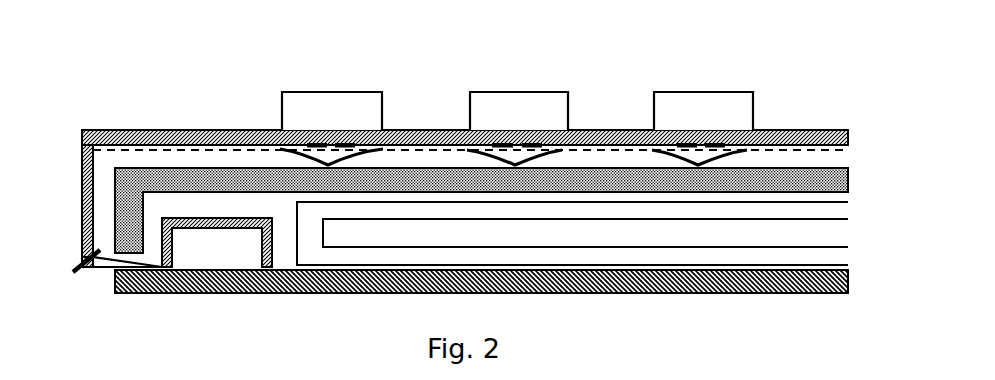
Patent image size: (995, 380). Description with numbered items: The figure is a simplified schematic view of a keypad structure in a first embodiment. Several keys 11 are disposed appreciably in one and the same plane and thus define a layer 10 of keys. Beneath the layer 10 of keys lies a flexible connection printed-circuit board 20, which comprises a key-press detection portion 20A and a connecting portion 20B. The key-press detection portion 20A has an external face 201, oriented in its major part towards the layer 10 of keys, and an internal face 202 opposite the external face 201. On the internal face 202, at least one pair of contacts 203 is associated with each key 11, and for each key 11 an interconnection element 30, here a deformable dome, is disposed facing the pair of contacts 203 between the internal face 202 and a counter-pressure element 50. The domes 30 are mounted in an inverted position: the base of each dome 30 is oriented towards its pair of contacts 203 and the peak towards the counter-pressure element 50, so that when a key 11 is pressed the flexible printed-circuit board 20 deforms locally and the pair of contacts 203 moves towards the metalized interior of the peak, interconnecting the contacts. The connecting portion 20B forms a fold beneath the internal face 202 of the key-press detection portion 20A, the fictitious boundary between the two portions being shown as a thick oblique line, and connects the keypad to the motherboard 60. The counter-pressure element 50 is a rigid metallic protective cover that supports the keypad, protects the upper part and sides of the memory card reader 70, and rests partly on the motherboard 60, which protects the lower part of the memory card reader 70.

The layer of keys 10 is at (112, 128).
The key 11 is at (353, 92).
The connection printed-circuit board 20 is at (80, 153).
The key-press detection portion 20A is at (80, 250).
The connecting portion 20B is at (92, 280).
The external face 201 is at (850, 133).
The internal face 202 is at (850, 148).
The pair of contacts 203 is at (315, 137).
The interconnection element 30 is at (350, 157).
The counter-pressure element 50 is at (850, 188).
The motherboard 60 is at (850, 288).
The memory card reader 70 is at (843, 252).